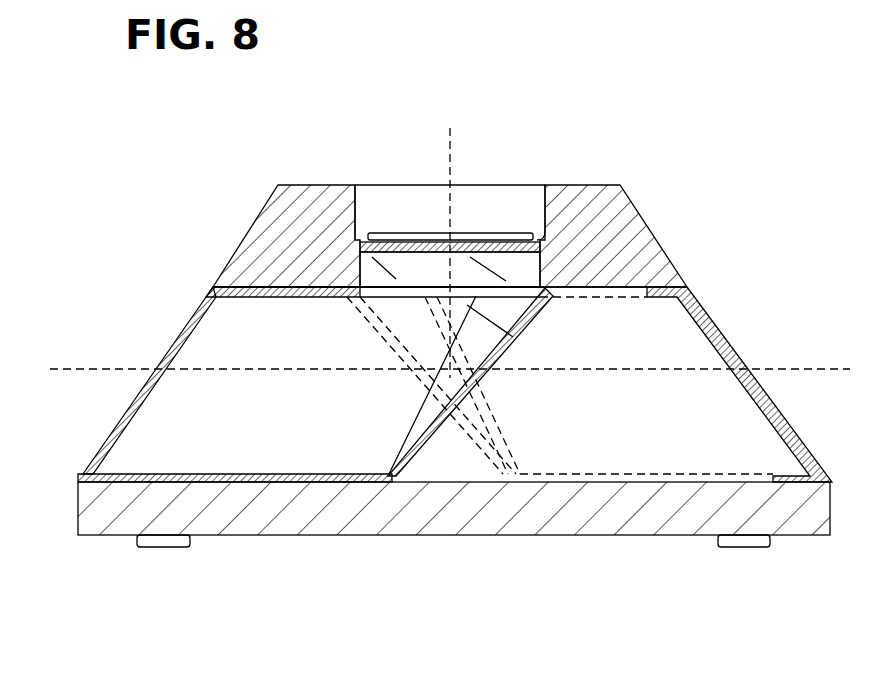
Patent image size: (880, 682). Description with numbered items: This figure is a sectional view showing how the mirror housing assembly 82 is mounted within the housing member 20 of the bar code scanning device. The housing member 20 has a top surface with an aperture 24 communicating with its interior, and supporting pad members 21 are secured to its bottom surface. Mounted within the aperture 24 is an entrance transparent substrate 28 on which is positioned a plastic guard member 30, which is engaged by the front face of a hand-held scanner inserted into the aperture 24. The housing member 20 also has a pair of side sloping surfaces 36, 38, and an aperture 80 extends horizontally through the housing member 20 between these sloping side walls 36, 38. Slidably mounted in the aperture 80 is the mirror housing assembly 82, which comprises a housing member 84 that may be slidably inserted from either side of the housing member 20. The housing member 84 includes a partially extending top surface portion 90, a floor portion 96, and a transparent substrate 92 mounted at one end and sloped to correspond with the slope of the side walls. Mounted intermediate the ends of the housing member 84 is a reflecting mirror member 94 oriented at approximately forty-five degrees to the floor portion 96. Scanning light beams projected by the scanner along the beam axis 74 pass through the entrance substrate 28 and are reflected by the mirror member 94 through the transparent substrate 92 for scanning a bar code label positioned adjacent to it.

The housing member 20 is at (540, 535).
The supporting pad members 21 is at (178, 547).
The aperture 24 is at (372, 126).
The entrance transparent substrate 28 is at (402, 256).
The plastic guard member 30 is at (474, 236).
The side sloping surface 36 is at (646, 220).
The side sloping surface 38 is at (267, 200).
The beam axis 74 is at (452, 136).
The aperture 80 is at (617, 289).
The mirror housing assembly 82 is at (417, 201).
The housing member 84 is at (90, 468).
The top surface portion 90 is at (282, 293).
The transparent substrate 92 is at (189, 320).
The reflecting mirror member 94 is at (490, 369).
The floor portion 96 is at (217, 473).